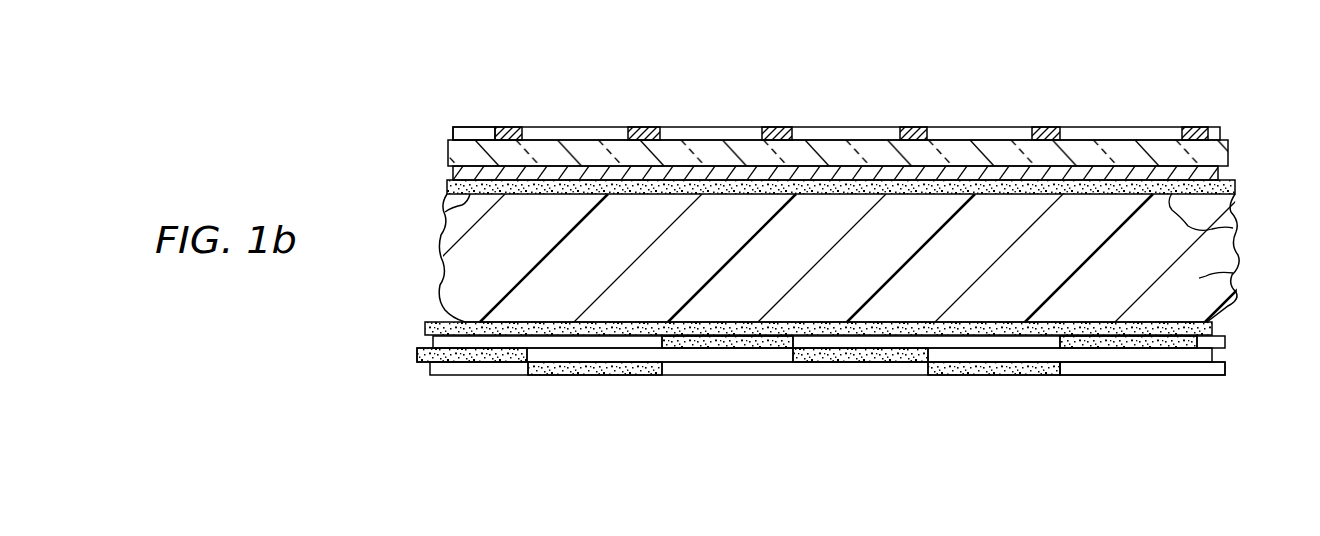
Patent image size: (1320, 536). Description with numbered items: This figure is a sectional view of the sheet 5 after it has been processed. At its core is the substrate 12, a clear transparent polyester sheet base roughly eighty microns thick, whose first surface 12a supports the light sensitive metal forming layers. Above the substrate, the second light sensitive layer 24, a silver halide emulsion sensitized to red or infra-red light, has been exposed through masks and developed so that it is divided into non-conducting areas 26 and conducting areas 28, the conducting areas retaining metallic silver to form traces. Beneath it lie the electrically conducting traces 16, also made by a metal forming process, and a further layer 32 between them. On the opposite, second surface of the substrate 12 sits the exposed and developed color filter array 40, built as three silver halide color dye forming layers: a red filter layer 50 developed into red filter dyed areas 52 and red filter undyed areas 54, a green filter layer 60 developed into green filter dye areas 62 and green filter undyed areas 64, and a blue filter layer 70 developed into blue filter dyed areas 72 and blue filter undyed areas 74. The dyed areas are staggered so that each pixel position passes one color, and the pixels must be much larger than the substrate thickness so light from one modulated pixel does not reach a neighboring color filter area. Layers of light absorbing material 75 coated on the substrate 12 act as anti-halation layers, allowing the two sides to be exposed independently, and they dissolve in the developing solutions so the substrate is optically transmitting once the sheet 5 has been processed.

The sheet 5 is at (664, 90).
The second light sensitive layer 24 is at (453, 130).
The non-conducting areas 26 is at (477, 130).
The conducting areas 28 is at (513, 128).
The chevron hatched layer 32 is at (448, 153).
The electrically conducting traces 16 is at (453, 172).
The first surface 12a is at (447, 210).
The substrate 12 is at (477, 251).
The light absorbing material 75 is at (1235, 238).
The color filter array 40 is at (388, 378).
The red filter layer 50 is at (434, 343).
The green filter layer 60 is at (420, 358).
The blue filter layer 70 is at (453, 376).
The red filter undyed areas 54 is at (588, 342).
The red filter dyed areas 52 is at (718, 348).
The green filter dye areas 62 is at (840, 357).
The green filter undyed areas 64 is at (957, 355).
The blue filter dyed areas 72 is at (1033, 367).
The blue filter undyed areas 74 is at (1155, 367).